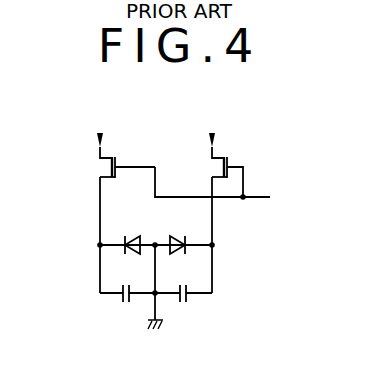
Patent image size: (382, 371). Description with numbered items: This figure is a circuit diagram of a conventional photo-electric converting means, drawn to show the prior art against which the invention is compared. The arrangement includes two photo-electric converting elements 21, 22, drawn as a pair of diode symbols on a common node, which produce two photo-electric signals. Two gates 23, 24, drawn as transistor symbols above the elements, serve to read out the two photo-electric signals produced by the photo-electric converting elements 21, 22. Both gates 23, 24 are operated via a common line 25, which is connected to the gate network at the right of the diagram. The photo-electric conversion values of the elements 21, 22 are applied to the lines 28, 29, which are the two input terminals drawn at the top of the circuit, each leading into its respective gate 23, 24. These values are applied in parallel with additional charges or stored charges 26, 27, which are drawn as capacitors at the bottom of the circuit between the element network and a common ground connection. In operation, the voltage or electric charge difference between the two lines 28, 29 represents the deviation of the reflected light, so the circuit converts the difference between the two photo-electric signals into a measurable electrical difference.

The photo-electric converting element 21 is at (138, 237).
The photo-electric converting element 22 is at (173, 236).
The gate 23 is at (116, 161).
The gate 24 is at (229, 162).
The line 25 is at (264, 198).
The stored charge 26 is at (126, 304).
The stored charge 27 is at (181, 304).
The line 28 is at (97, 136).
The line 29 is at (209, 136).